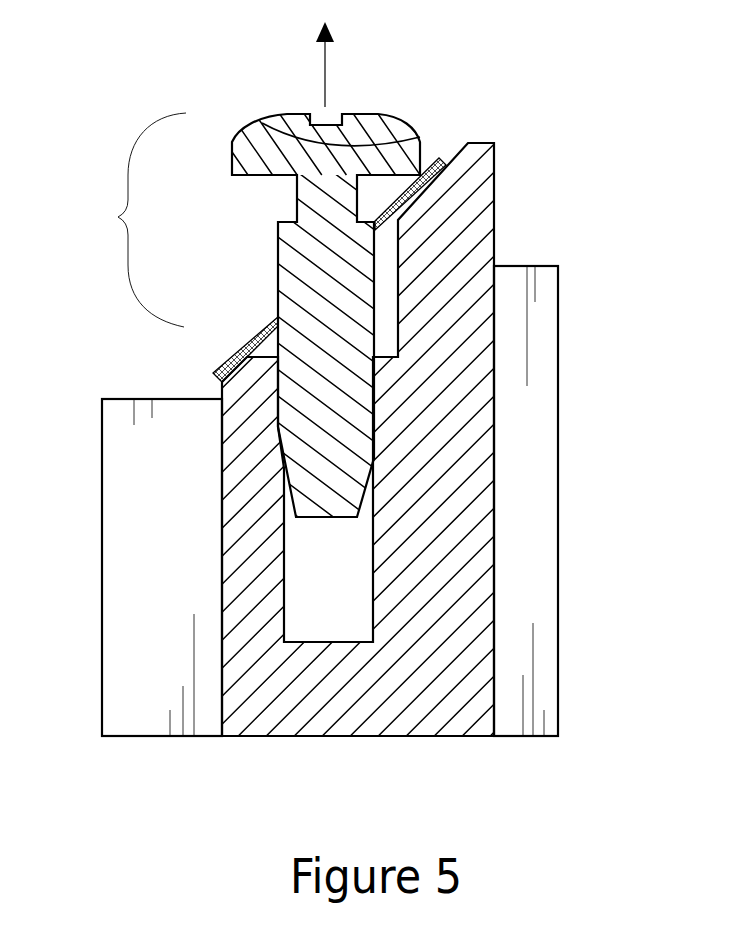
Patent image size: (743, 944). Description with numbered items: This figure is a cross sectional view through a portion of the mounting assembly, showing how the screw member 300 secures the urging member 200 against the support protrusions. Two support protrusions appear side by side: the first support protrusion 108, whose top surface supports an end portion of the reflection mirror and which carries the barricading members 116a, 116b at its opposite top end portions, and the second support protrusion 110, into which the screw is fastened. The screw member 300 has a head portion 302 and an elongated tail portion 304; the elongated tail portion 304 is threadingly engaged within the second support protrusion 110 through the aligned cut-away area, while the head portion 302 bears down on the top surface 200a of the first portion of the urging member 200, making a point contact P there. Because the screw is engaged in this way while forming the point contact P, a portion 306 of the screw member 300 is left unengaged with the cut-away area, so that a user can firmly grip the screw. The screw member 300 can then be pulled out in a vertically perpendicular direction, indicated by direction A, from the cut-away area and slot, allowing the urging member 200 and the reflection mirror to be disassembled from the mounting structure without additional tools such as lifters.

The first support protrusion 108 is at (110, 468).
The second support protrusion 110 is at (495, 607).
The barricading member 116a is at (553, 272).
The barricading member 116b is at (113, 398).
The urging member 200 is at (205, 310).
The top surface 200a is at (263, 317).
The screw member 300 is at (236, 345).
The head portion 302 is at (257, 125).
The elongated tail portion 304 is at (315, 475).
The portion 306 is at (236, 345).
The point contact P is at (423, 172).
The direction A is at (318, 64).